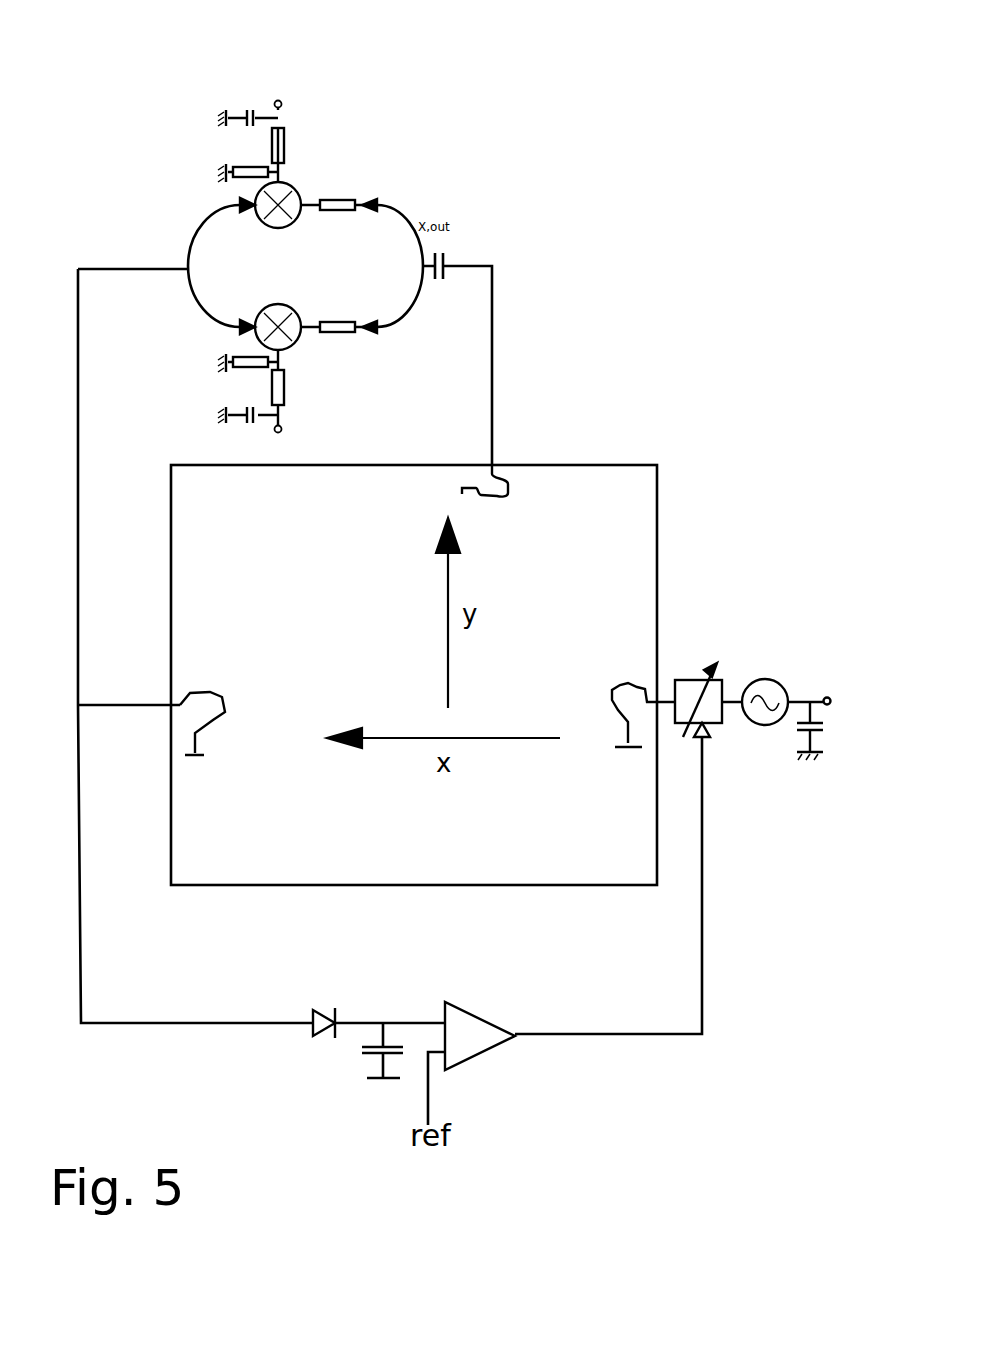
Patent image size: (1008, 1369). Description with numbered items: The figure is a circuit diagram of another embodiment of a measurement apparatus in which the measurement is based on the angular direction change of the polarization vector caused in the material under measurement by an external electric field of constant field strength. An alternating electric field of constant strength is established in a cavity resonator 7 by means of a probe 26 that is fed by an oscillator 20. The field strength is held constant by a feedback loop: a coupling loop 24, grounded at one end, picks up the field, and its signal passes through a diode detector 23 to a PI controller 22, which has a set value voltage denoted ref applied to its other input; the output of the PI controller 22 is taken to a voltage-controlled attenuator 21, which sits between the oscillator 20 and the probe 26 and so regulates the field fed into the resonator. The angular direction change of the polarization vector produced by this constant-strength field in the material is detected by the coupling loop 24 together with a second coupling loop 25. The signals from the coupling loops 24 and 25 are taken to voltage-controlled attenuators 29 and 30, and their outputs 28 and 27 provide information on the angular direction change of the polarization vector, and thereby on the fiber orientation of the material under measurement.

The cavity resonator 7 is at (526, 460).
The oscillator 20 is at (743, 678).
The voltage-controlled attenuator 21 is at (693, 678).
The PI controller 22 is at (457, 1002).
The diode detector 23 is at (323, 1003).
The coupling loop 24 is at (227, 717).
The coupling loop 25 is at (490, 503).
The probe 26 is at (610, 697).
The output 27 is at (276, 103).
The output 28 is at (290, 424).
The voltage-controlled attenuator 29 is at (240, 202).
The voltage-controlled attenuator 30 is at (212, 321).